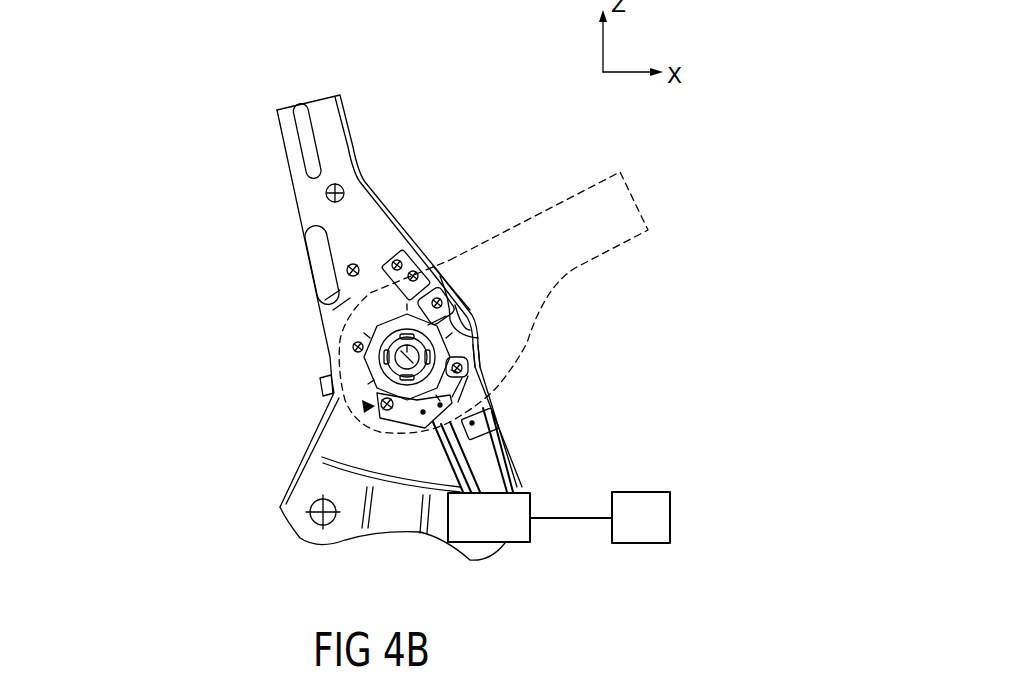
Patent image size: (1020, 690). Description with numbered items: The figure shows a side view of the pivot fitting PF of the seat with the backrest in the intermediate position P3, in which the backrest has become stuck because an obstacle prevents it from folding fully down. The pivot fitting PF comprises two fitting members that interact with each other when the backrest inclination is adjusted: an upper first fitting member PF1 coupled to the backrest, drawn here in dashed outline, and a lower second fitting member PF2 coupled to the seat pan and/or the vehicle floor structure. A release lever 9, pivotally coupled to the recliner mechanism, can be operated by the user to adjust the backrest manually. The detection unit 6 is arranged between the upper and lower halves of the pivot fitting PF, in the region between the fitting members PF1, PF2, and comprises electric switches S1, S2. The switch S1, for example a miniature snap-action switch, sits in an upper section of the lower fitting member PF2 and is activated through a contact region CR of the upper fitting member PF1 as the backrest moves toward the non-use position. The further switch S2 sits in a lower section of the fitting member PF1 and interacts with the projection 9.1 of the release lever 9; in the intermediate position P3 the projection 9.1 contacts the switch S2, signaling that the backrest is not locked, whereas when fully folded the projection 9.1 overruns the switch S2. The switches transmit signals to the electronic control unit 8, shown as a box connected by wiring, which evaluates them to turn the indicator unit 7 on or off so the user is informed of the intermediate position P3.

The pivot fitting PF is at (213, 178).
The first fitting member PF1 is at (581, 193).
The second fitting member PF2 is at (280, 497).
The intermediate position P3 is at (684, 160).
The release lever 9 is at (437, 268).
The projection 9.1 is at (456, 383).
The detection unit 6 is at (330, 388).
The contact region CR is at (470, 422).
The switch S1 is at (493, 430).
The further switch S2 is at (378, 424).
The indicator unit 7 is at (660, 512).
The electronic control unit 8 is at (520, 537).